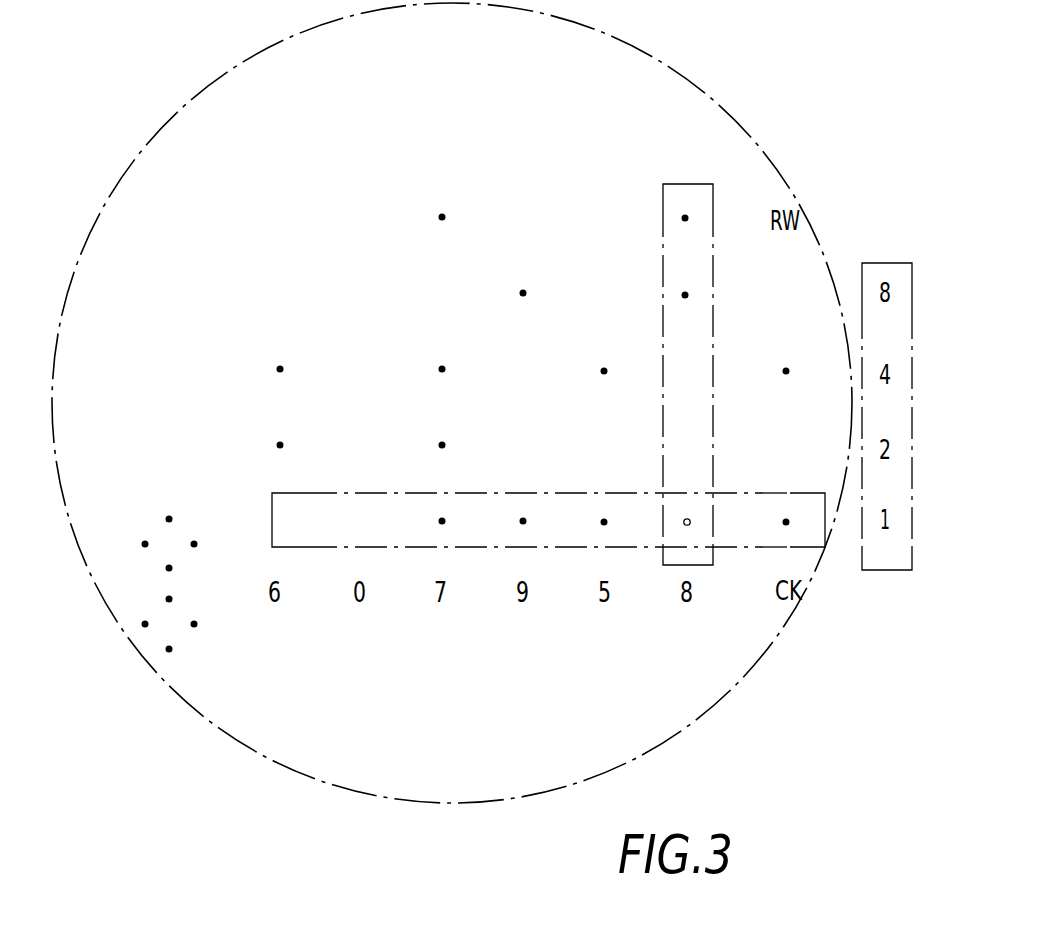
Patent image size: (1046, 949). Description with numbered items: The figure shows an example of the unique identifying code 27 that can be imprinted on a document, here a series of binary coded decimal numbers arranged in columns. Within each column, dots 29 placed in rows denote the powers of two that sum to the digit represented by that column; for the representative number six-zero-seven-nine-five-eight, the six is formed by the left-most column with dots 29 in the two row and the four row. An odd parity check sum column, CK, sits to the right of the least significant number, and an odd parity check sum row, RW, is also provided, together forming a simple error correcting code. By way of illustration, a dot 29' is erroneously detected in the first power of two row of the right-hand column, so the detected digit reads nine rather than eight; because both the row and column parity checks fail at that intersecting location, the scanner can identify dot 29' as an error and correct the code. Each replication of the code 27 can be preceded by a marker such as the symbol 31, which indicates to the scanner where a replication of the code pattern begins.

The unique identifying code 27 is at (690, 80).
The dots 29 is at (533, 370).
The erroneously detected dot 29' is at (726, 483).
The symbol 31 is at (157, 522).